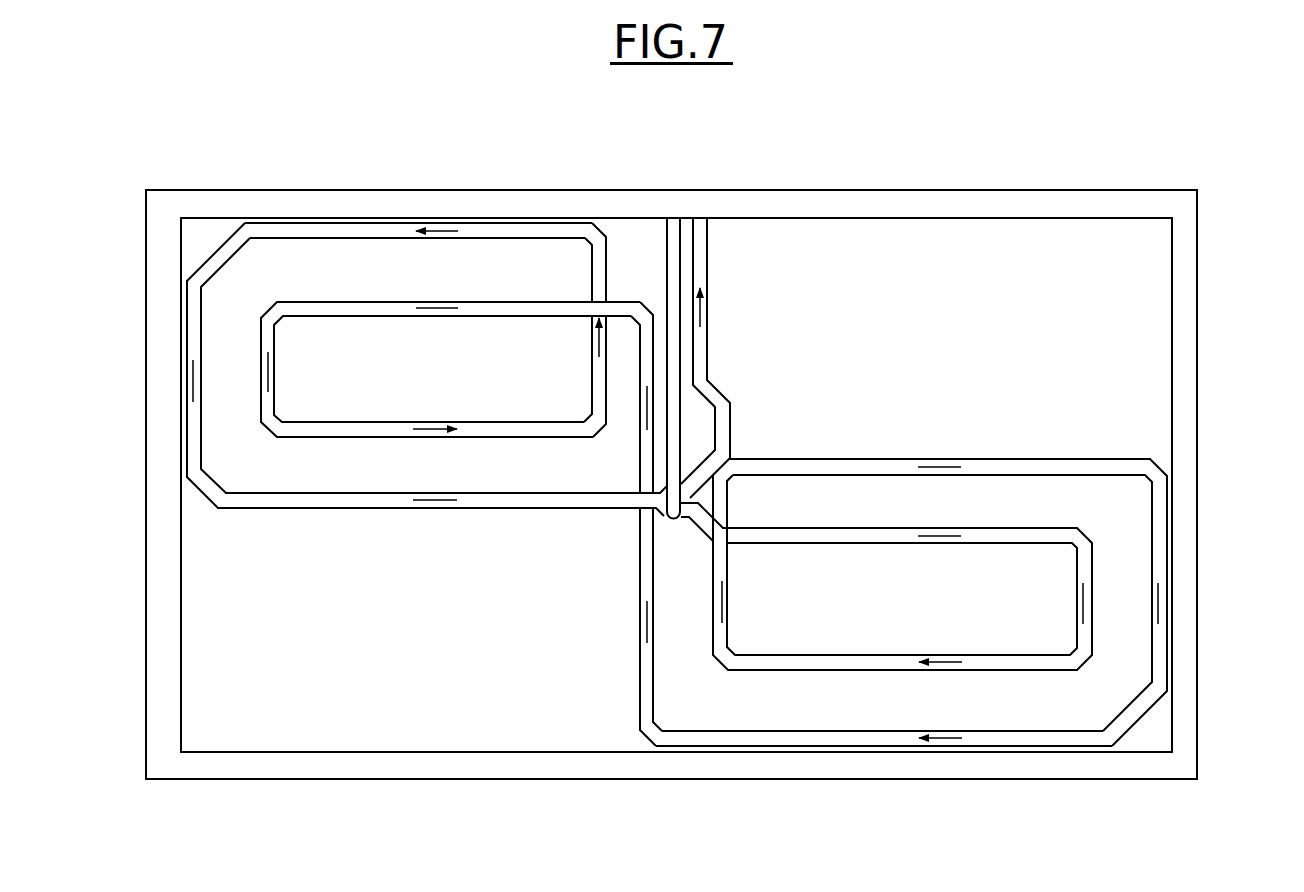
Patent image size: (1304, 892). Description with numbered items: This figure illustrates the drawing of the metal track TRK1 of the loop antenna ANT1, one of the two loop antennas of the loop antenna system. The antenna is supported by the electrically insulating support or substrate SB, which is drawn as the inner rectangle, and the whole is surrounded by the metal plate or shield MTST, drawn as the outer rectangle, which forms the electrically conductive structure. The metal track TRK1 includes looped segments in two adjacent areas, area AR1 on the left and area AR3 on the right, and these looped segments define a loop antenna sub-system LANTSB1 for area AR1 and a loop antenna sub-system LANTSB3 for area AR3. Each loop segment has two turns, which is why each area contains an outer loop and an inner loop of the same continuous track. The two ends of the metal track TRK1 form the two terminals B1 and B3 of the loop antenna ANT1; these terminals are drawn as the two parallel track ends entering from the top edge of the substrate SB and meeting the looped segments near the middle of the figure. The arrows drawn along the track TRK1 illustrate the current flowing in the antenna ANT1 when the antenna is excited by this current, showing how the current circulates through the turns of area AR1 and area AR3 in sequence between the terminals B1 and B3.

The metal plate or shield MTST is at (1195, 315).
The electrically insulating support or substrate SB is at (1027, 248).
The loop antenna ANT1 is at (427, 366).
The area AR1 is at (427, 330).
The loop antenna sub-system LANTSB1 is at (473, 217).
The metal track TRK1 is at (547, 232).
The terminal B3 is at (675, 217).
The terminal B1 is at (700, 217).
The area AR3 is at (899, 564).
The loop antenna sub-system LANTSB3 is at (980, 746).